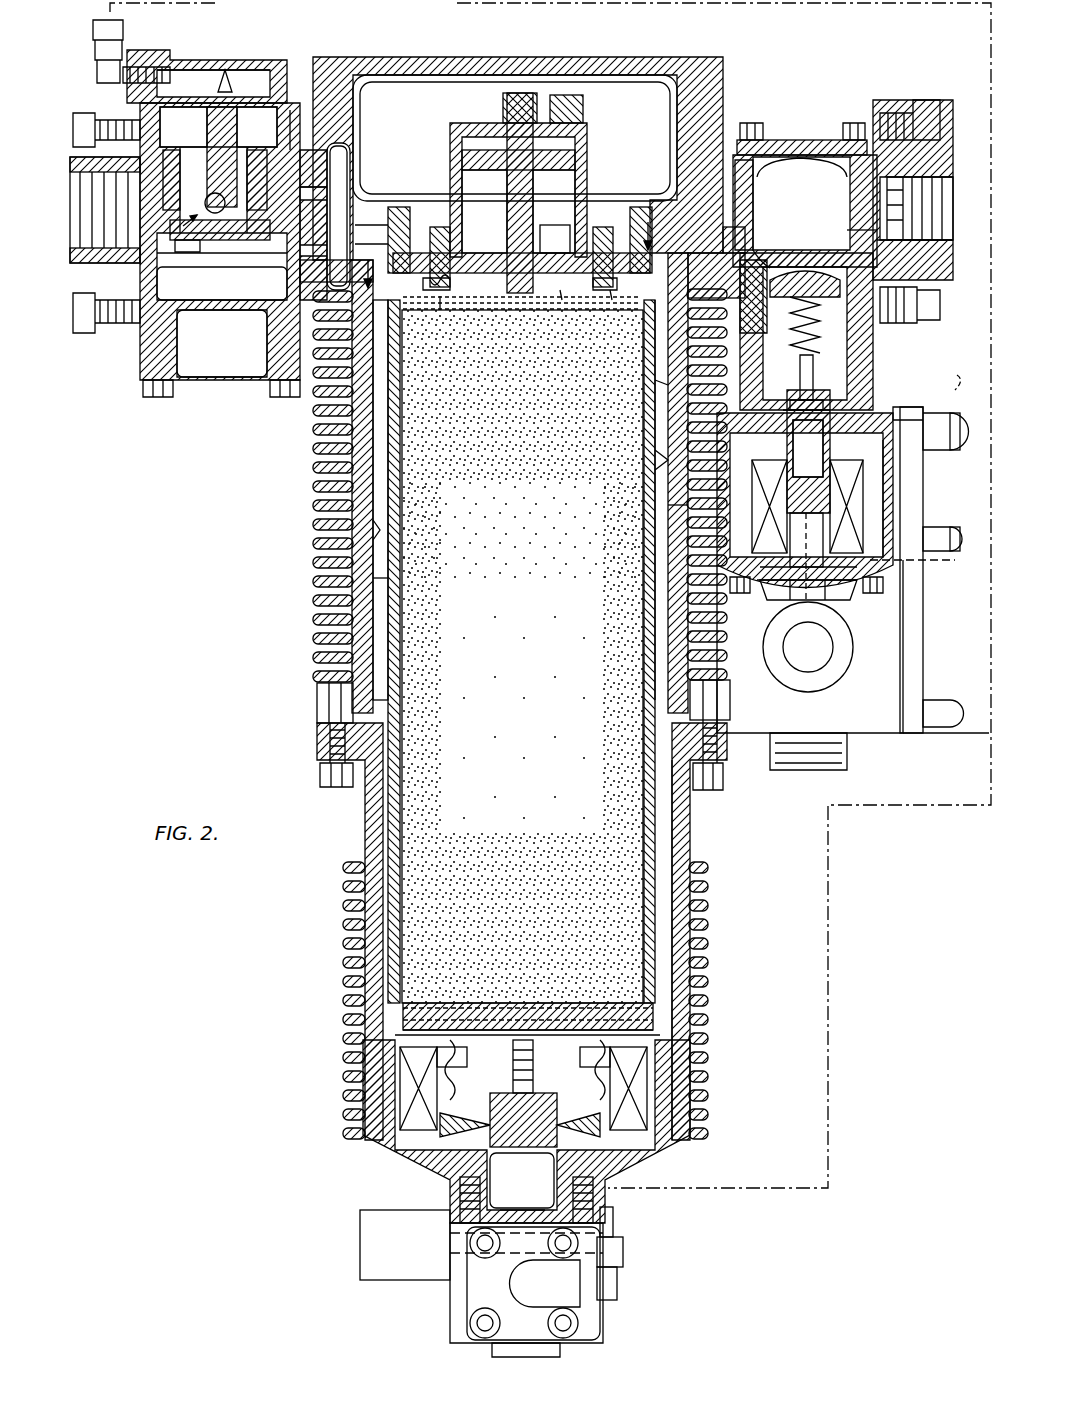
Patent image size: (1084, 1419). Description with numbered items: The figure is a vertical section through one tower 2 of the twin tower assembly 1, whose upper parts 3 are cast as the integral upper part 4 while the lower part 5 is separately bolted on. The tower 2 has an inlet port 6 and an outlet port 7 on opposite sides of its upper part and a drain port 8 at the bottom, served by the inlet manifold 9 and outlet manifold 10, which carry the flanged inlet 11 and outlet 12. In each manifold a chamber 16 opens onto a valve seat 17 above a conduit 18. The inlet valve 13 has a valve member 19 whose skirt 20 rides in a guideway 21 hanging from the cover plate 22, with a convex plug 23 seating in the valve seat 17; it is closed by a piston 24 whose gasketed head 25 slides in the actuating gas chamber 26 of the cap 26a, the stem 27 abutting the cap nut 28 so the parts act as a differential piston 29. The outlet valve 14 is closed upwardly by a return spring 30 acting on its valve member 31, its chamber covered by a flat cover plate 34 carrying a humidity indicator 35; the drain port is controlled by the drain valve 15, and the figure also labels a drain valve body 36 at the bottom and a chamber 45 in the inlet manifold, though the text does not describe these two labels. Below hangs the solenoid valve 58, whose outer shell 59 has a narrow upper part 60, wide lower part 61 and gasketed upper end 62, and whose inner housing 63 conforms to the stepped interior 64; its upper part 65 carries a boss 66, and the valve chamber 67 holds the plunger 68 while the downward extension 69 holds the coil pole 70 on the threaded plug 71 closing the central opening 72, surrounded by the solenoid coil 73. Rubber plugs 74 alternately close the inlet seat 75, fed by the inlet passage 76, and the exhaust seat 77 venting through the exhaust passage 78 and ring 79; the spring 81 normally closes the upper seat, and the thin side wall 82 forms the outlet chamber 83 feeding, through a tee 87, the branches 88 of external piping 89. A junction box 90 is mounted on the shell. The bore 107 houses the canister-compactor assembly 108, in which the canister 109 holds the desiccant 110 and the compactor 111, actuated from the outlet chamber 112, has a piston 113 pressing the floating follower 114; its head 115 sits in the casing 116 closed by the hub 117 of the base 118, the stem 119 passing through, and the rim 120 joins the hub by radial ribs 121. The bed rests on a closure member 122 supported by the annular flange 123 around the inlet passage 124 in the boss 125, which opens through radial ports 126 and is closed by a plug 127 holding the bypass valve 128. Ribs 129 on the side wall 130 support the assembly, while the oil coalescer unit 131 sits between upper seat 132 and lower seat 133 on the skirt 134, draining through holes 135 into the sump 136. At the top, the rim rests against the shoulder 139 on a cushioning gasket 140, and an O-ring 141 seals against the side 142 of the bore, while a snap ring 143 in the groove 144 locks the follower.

The assembly 1 is at (305, 488).
The tower 2 is at (305, 616).
The upper part 3 is at (317, 686).
The integral upper part 4 is at (613, 60).
The lower part 5 is at (326, 828).
The inlet port 6 is at (345, 215).
The outlet port 7 is at (745, 205).
The drain port 8 is at (533, 1212).
The inlet manifold 9 is at (355, 310).
The outlet manifold 10 is at (885, 345).
The inlet 11 is at (105, 210).
The outlet 12 is at (950, 228).
The inlet valve 13 is at (183, 252).
The outlet valve 14 is at (723, 246).
The drain valve 15 is at (540, 1355).
The chamber 16 is at (228, 262).
The valve seat 17 is at (292, 253).
The conduit 18 is at (236, 291).
The valve member 19 is at (258, 200).
The skirt 20 is at (222, 157).
The guideway 21 is at (290, 110).
The cover plate 22 is at (312, 187).
The plug 23 is at (215, 243).
The piston 24 is at (245, 107).
The head 25 is at (205, 72).
The actuating gas chamber 26 is at (248, 80).
The cap 26a is at (248, 40).
The stem 27 is at (207, 124).
The cap nut 28 is at (145, 150).
The differential piston 29 is at (191, 210).
The return spring 30 is at (855, 300).
The valve member 31 is at (805, 268).
The cover plate 34 is at (792, 140).
The humidity indicator 35 is at (895, 195).
The drain valve body 36 is at (450, 1298).
The chamber 45 is at (243, 250).
The solenoid valve 58 is at (700, 500).
The outer shell 59 is at (885, 413).
The upper part 60 is at (650, 382).
The lower part 61 is at (905, 477).
The upper end 62 is at (890, 308).
The inner housing 63 is at (958, 550).
The interior 64 is at (880, 480).
The upper part 65 is at (645, 300).
The boss 66 is at (792, 318).
The valve chamber 67 is at (830, 412).
The plunger 68 is at (830, 437).
The downward extension 69 is at (794, 583).
The coil pole 70 is at (770, 583).
The plug 71 is at (840, 598).
The central opening 72 is at (860, 570).
The solenoid coil 73 is at (855, 515).
The rubber plug 74 is at (770, 500).
The inlet seat 75 is at (825, 400).
The inlet passage 76 is at (815, 375).
The exhaust seat 77 is at (800, 570).
The exhaust passage 78 is at (925, 563).
The ring 79 is at (850, 640).
The spring 81 is at (808, 438).
The side wall 82 is at (750, 385).
The outlet chamber 83 is at (650, 433).
The tee 87 is at (956, 372).
The branch 88 is at (457, 3).
The external piping 89 is at (985, 770).
The junction box 90 is at (849, 694).
The bore 107 is at (660, 460).
The canister-compactor assembly 108 is at (388, 462).
The canister 109 is at (648, 400).
The desiccant 110 is at (504, 559).
The compactor 111 is at (478, 118).
The outlet chamber 112 is at (394, 142).
The piston 113 is at (538, 206).
The floating follower 114 is at (460, 290).
The head 115 is at (478, 172).
The casing 116 is at (462, 162).
The hub 117 is at (545, 247).
The base 118 is at (520, 300).
The stem 119 is at (507, 208).
The rim 120 is at (438, 250).
The radial rib 121 is at (430, 300).
The closure member 122 is at (548, 1003).
The annular flange 123 is at (455, 1003).
The inlet passage 124 is at (500, 1003).
The annular boss 125 is at (595, 1060).
The radial port 126 is at (455, 1070).
The plug 127 is at (492, 1147).
The bypass valve 128 is at (600, 1030).
The rib 129 is at (650, 1090).
The side wall 130 is at (700, 985).
The oil coalescer unit 131 is at (345, 1114).
The upper annular seat 132 is at (400, 1080).
The lower annular seat 133 is at (380, 1145).
The skirt 134 is at (595, 1135).
The drain hole 135 is at (440, 1160).
The sump 136 is at (496, 1194).
The shoulder 139 is at (392, 207).
The cushioning gasket 140 is at (355, 225).
The O-ring 141 is at (354, 244).
The side 142 is at (598, 295).
The snap ring 143 is at (565, 285).
The groove 144 is at (618, 300).